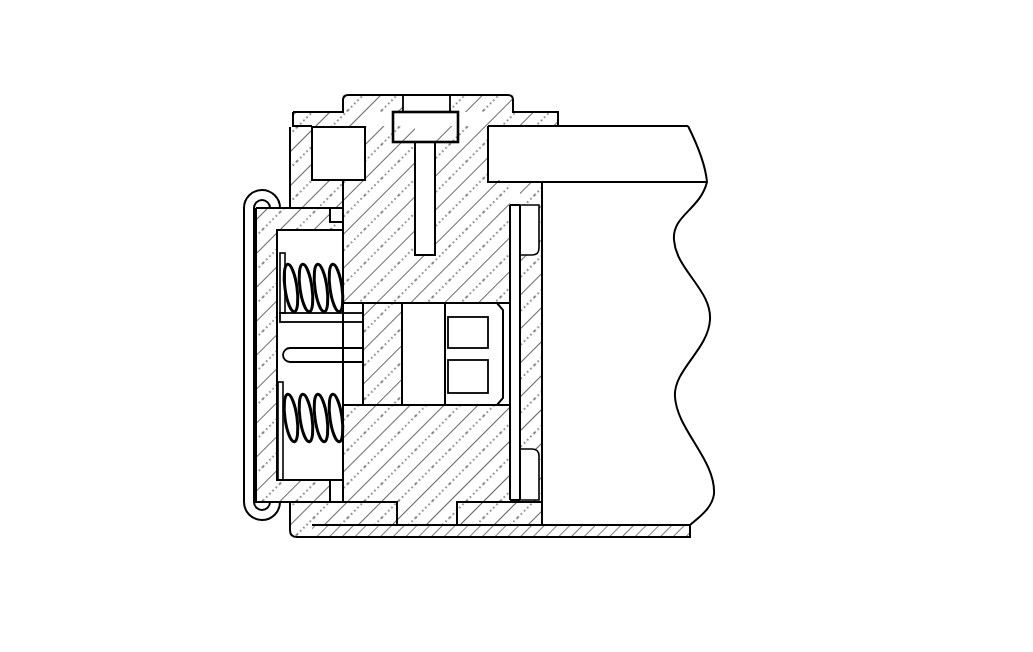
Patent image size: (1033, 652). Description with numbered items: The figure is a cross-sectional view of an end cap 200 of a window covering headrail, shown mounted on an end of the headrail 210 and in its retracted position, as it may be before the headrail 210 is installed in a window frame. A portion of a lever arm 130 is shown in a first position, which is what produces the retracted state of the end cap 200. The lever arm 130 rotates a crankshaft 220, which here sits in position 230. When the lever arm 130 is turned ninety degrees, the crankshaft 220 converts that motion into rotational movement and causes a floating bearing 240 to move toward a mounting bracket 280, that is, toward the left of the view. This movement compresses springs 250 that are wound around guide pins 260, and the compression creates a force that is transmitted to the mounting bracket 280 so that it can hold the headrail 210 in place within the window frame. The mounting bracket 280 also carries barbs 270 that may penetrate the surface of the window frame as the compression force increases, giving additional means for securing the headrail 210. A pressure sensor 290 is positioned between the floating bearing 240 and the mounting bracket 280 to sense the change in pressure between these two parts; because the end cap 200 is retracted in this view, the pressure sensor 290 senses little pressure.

The end cap 200 is at (176, 100).
The lever arm 130 is at (524, 118).
The headrail 210 is at (686, 160).
The crankshaft 220 is at (490, 423).
The position 230 is at (415, 316).
The floating bearing 240 is at (373, 383).
The springs 250 is at (310, 452).
The guide pins 260 is at (313, 452).
The barbs 270 is at (244, 252).
The mounting bracket 280 is at (247, 413).
The pressure sensor 290 is at (283, 356).